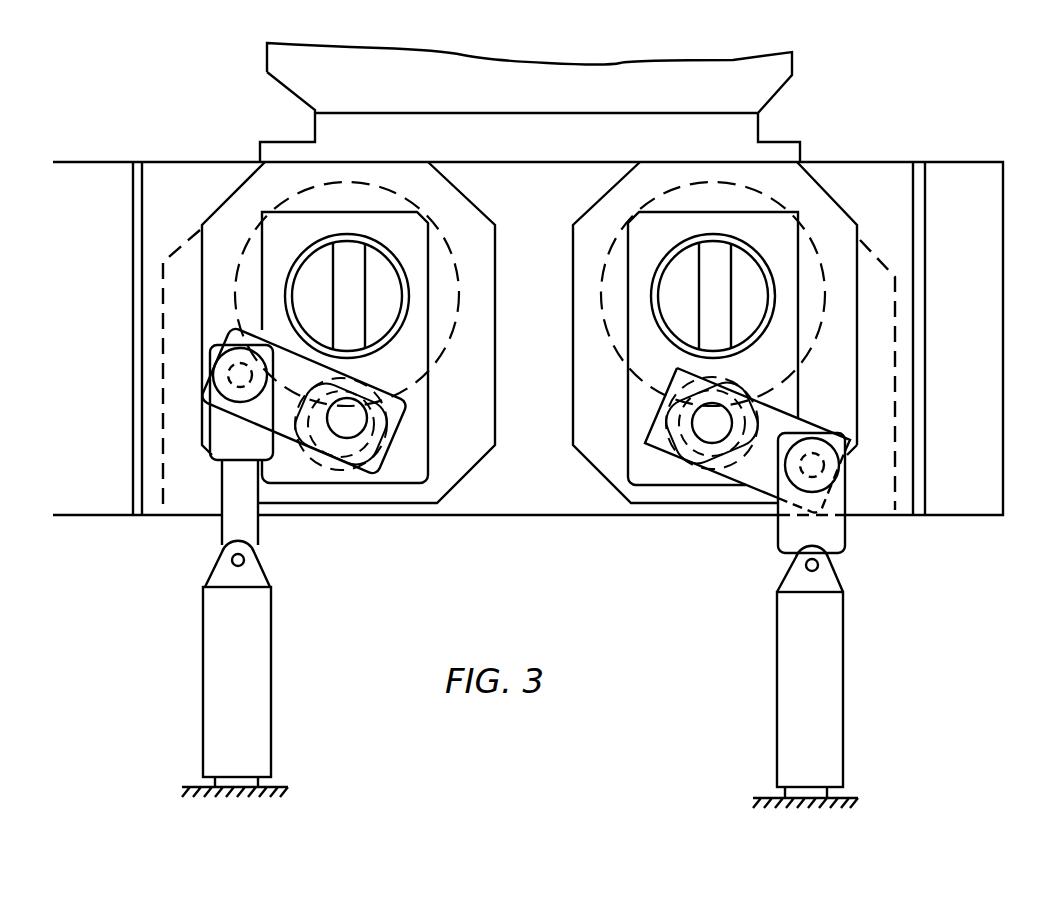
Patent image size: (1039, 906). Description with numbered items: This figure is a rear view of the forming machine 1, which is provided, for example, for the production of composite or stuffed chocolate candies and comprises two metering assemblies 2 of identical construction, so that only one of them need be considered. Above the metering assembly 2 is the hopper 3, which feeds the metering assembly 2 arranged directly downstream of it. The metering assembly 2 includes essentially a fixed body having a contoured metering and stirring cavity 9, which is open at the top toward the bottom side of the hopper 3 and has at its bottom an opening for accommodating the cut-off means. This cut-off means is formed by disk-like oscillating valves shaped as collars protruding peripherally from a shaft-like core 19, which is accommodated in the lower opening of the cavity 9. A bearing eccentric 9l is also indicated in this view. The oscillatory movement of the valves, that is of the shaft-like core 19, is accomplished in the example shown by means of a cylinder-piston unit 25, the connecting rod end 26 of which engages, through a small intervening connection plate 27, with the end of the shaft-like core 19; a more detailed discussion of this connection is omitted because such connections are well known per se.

The forming machine 1 is at (895, 135).
The metering assembly 2 is at (407, 366).
The hopper 3 is at (743, 102).
The metering and stirring cavity 9 is at (443, 240).
The bearing eccentric 9l is at (338, 474).
The shaft-like core 19 is at (352, 458).
The cylinder-piston unit 25 is at (257, 656).
The connecting rod end 26 is at (227, 445).
The connection plate 27 is at (322, 373).